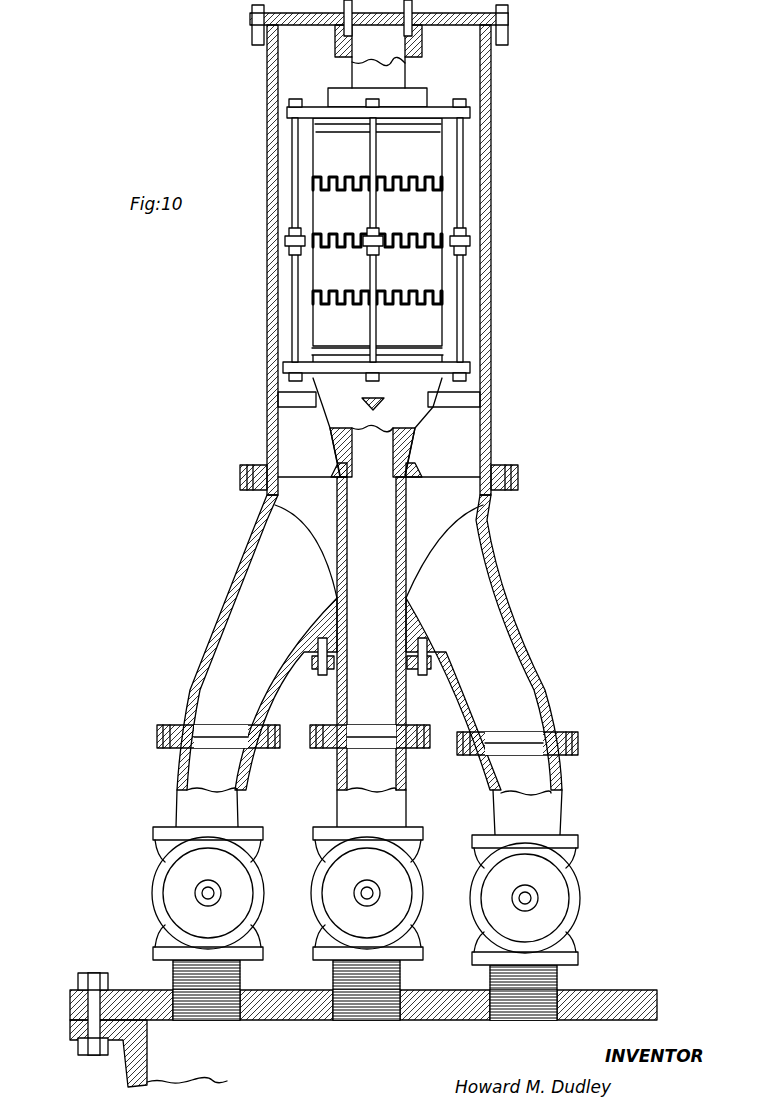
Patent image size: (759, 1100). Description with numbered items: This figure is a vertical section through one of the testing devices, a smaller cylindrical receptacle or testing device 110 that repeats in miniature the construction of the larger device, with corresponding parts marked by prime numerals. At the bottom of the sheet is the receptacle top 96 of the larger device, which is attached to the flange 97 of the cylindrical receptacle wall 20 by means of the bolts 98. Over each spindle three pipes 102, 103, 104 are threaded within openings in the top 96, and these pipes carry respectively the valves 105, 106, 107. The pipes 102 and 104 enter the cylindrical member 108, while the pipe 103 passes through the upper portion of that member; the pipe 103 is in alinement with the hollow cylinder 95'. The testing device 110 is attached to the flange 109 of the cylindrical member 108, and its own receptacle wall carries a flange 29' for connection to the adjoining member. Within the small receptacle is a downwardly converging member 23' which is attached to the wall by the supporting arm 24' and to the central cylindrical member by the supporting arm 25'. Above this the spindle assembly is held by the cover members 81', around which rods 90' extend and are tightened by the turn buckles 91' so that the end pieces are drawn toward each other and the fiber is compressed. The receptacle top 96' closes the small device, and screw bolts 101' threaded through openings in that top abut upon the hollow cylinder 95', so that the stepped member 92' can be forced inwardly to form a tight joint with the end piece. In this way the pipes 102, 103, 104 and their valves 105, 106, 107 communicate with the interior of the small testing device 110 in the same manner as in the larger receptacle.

The screw bolt 101' is at (378, 28).
The receptacle top 96' is at (379, 247).
The stepped member 92' is at (365, 84).
The hollow cylinder 95' is at (404, 72).
The cover member 81' is at (377, 240).
The rod 90' is at (376, 240).
The turn buckle 91' is at (377, 250).
The cylindrical receptacle or testing device 110 is at (491, 282).
The supporting arm 24' is at (297, 415).
The downwardly converging member 23' is at (371, 427).
The supporting arm 25' is at (454, 420).
The flange 29' is at (373, 470).
The flange 109 is at (258, 490).
The cylindrical member 108 is at (488, 503).
The pipe 104 is at (527, 615).
The pipe 102 is at (202, 646).
The pipe 103 is at (407, 702).
The valve 105 is at (243, 887).
The valve 106 is at (403, 888).
The valve 107 is at (565, 893).
The receptacle top 96 is at (365, 991).
The bolt 98 is at (95, 973).
The flange 97 is at (77, 1037).
The cylindrical receptacle wall 20 is at (125, 1075).